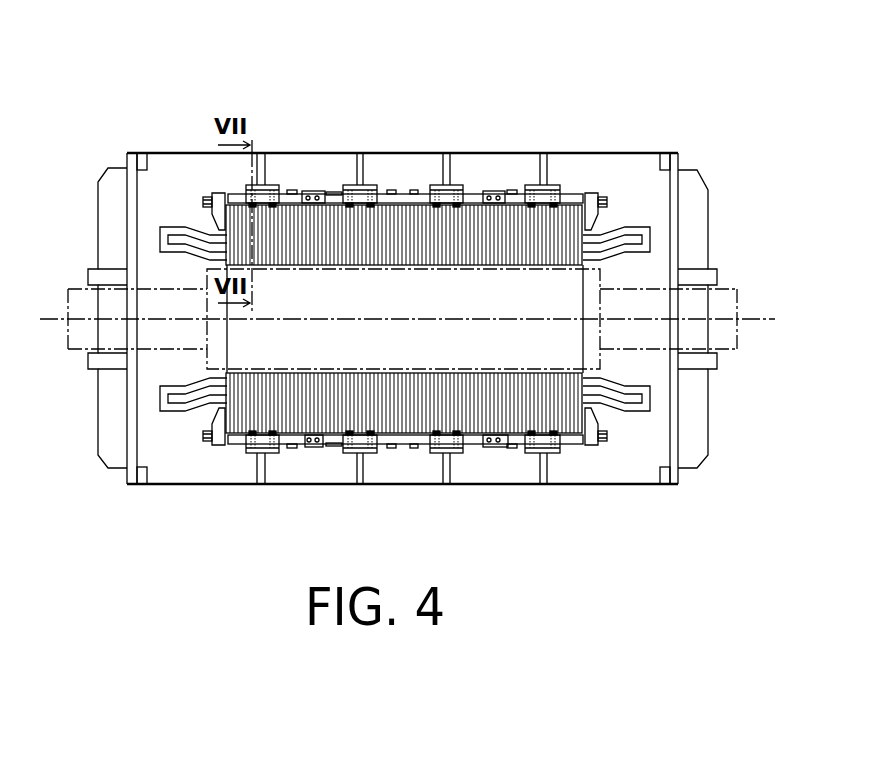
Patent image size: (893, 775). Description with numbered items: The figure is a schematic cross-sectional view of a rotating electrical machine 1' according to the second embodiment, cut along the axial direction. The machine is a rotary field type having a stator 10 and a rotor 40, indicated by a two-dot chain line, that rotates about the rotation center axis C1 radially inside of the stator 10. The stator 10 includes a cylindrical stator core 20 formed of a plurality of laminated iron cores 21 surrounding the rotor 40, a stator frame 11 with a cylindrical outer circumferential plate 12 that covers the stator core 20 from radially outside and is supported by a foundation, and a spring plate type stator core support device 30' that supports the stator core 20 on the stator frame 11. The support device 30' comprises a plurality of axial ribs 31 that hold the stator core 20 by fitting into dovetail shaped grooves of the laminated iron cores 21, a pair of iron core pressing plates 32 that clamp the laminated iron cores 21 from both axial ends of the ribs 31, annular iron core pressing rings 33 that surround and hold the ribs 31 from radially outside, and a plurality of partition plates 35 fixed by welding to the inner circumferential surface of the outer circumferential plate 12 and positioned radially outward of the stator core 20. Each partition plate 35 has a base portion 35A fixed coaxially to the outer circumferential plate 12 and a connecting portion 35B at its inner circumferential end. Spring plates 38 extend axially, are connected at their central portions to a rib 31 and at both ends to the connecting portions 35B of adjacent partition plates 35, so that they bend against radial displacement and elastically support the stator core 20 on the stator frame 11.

The rotating electrical machine 1' is at (115, 9).
The stator 10 is at (688, 150).
The stator frame 11 is at (402, 273).
The outer circumferential plate 12 is at (576, 152).
The stator core 20 is at (339, 371).
The laminated iron cores 21 is at (287, 420).
The stator core support device 30' is at (339, 294).
The axial rib 31 is at (234, 200).
The iron core pressing plate 32 is at (219, 200).
The iron core pressing ring 33 is at (300, 191).
The partition plate 35 is at (380, 245).
The base portion 35A is at (262, 168).
The connecting portion 35B is at (281, 190).
The spring plate 38 is at (337, 192).
The rotor 40 is at (606, 276).
The rotation center axis C1 is at (42, 317).